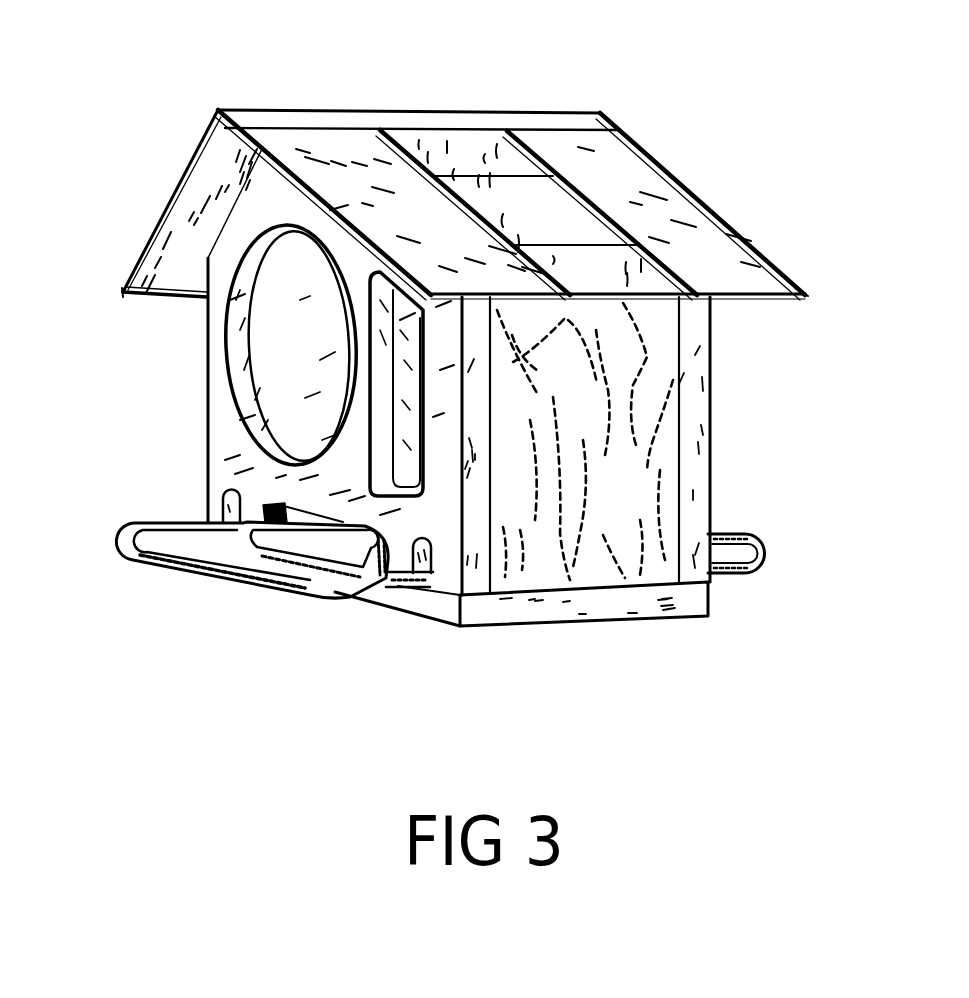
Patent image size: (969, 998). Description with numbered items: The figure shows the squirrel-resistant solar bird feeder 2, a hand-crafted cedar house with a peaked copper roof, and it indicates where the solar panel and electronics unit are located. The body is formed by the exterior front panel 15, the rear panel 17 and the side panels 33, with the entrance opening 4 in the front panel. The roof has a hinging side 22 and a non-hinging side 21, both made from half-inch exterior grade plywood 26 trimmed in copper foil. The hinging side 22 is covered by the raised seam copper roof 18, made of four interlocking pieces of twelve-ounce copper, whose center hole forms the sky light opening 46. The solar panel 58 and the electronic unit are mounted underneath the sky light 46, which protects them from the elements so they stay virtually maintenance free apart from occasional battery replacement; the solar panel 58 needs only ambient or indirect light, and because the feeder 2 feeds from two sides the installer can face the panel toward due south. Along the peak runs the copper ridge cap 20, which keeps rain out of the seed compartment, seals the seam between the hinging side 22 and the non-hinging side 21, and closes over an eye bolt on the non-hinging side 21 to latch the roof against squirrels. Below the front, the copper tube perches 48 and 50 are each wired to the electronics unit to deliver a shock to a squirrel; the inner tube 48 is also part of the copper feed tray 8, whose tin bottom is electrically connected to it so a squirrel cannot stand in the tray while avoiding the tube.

The bird feeder 2 is at (123, 237).
The entrance hole 4 is at (297, 382).
The feed tray 8 is at (355, 484).
The exterior front panel 15 is at (482, 556).
The rear panel 17 is at (703, 398).
The raised seam copper roof 18 is at (682, 225).
The copper ridge cap 20 is at (413, 122).
The non-hinging side of the roof 21 is at (198, 150).
The hinging side of the roof 22 is at (806, 292).
The plywood 26 is at (153, 278).
The side panels 33 is at (566, 460).
The sky light opening 46 is at (479, 205).
The inner tube perch 48 is at (222, 518).
The perch 50 is at (250, 590).
The solar panel 58 is at (562, 212).